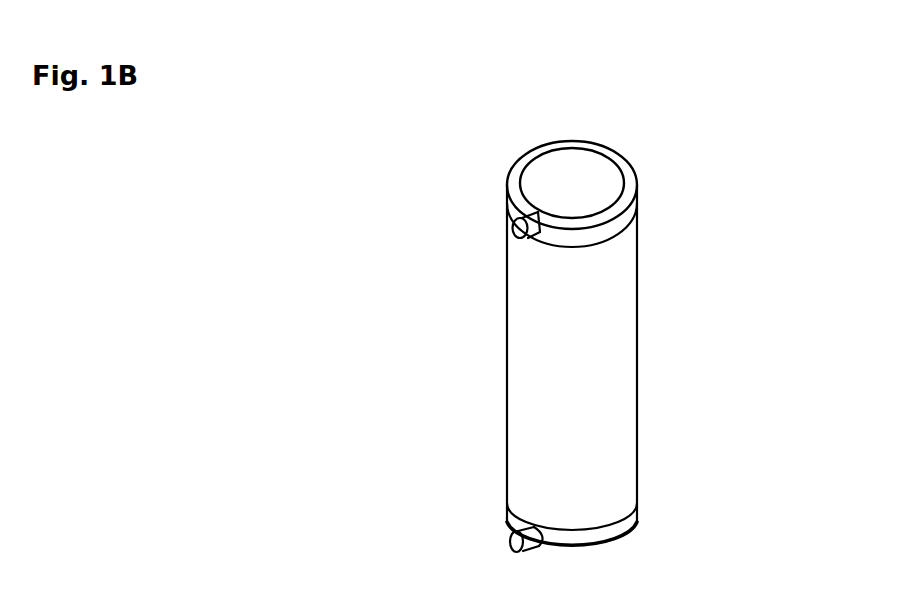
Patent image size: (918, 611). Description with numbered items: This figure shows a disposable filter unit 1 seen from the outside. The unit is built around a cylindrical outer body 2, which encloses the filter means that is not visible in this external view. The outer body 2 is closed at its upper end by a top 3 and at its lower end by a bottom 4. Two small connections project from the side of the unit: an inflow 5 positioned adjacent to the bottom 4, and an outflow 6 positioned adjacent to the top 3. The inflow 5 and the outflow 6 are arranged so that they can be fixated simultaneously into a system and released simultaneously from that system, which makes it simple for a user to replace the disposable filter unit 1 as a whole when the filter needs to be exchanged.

The disposable filter unit 1 is at (396, 144).
The outer body 2 is at (518, 302).
The top 3 is at (658, 189).
The bottom 4 is at (637, 511).
The inflow 5 is at (518, 542).
The outflow 6 is at (518, 229).